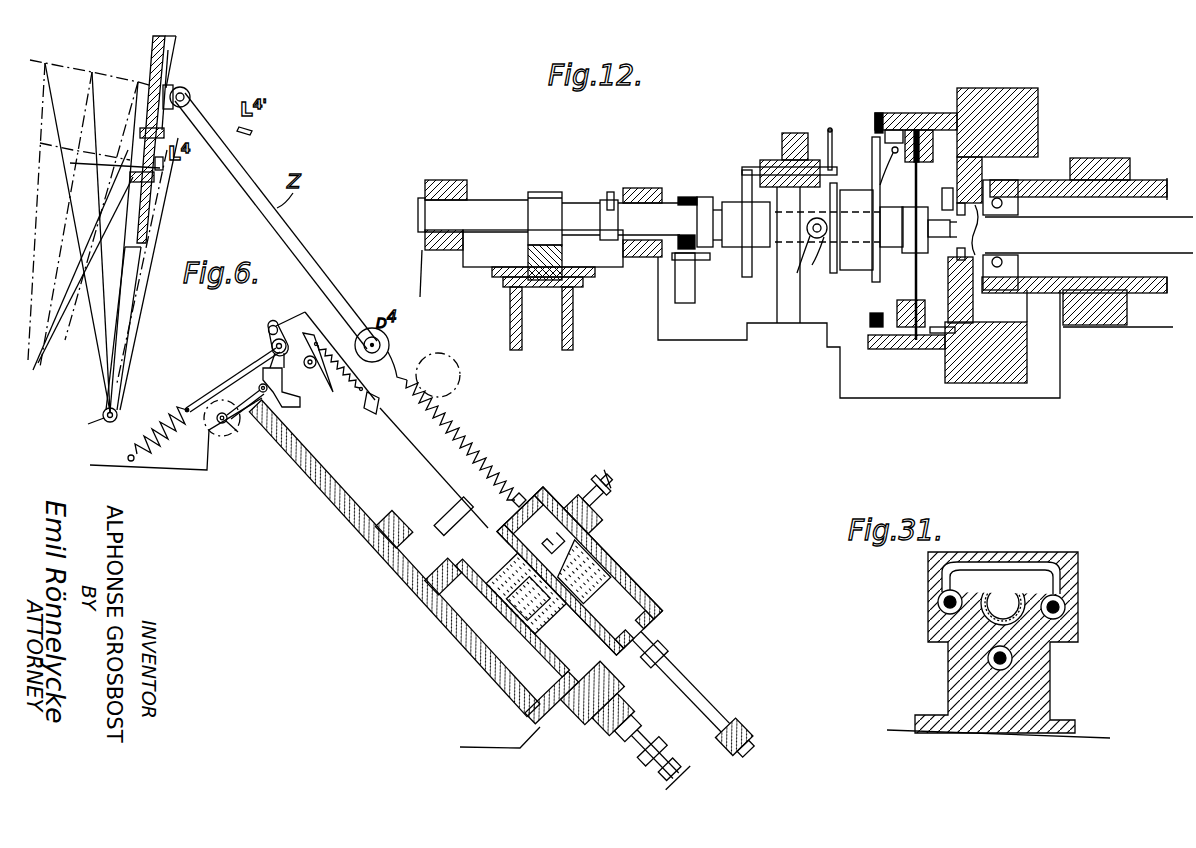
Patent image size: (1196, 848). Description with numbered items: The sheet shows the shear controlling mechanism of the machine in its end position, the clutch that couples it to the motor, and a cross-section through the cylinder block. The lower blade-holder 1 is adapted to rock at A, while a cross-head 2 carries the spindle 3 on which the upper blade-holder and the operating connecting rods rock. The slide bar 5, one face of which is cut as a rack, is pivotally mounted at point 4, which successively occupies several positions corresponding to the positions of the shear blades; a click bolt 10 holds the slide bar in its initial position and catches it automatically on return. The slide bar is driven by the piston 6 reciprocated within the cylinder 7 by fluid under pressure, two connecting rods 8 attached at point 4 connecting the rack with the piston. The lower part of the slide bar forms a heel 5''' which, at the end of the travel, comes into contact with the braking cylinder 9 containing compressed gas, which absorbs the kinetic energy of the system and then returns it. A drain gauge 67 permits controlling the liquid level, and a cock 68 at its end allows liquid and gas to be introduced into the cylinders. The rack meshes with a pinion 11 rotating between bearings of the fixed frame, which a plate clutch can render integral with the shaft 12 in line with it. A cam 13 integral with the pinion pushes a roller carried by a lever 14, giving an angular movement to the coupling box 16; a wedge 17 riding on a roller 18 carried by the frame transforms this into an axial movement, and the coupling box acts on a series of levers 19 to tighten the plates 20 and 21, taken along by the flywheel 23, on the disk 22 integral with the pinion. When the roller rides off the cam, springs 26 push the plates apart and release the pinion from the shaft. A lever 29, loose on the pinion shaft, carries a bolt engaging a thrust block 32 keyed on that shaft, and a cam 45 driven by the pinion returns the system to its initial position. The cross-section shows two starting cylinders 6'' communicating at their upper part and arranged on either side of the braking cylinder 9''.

In FIG. 6, the lower blade-holder 1 is at (130, 273).
In FIG. 6, the cross-head 2 is at (165, 86).
In FIG. 6, the spindle 3 is at (186, 92).
In FIG. 6, the pivot point 4 is at (376, 344).
In FIG. 6, the slide bar 5 is at (457, 429).
In FIG. 6, the heel 5''' is at (435, 511).
In FIG. 6, the piston 6 is at (580, 571).
In FIG. 6, the cylinder 7 is at (613, 557).
In FIG. 6, the connecting rods 8 is at (710, 703).
In FIG. 6, the braking cylinder 9 is at (474, 585).
In FIG. 6, the click bolt 10 is at (327, 375).
In FIG. 6, the pinion 11 is at (461, 374).
In FIG. 12, the pinion 11 is at (553, 192).
In FIG. 12, the shaft 12 is at (1120, 207).
In FIG. 12, the cam 13 is at (745, 275).
In FIG. 12, the lever 14 is at (837, 150).
In FIG. 12, the coupling box 16 is at (852, 265).
In FIG. 12, the wedge or gradient 17 is at (823, 275).
In FIG. 12, the roller 18 is at (807, 260).
In FIG. 12, the levers 19 is at (893, 209).
In FIG. 12, the plate 20 is at (917, 123).
In FIG. 12, the plate 21 is at (930, 123).
In FIG. 12, the disk 22 is at (912, 239).
In FIG. 12, the flywheel 23 is at (1027, 113).
In FIG. 12, the springs 26 is at (922, 123).
In FIG. 12, the lever 29 is at (683, 293).
In FIG. 12, the thrust block 32 is at (710, 263).
In FIG. 12, the cam 45 is at (615, 192).
In FIG. 6, the drain gauge 67 is at (612, 490).
In FIG. 6, the cock 68 is at (600, 478).
In FIG. 31, the starting cylinders 6'' is at (984, 597).
In FIG. 31, the braking cylinder 9'' is at (948, 668).